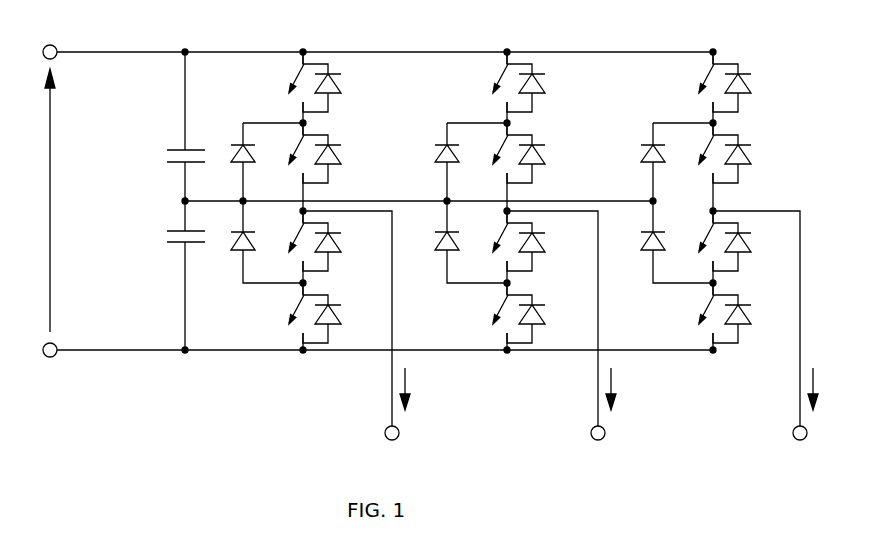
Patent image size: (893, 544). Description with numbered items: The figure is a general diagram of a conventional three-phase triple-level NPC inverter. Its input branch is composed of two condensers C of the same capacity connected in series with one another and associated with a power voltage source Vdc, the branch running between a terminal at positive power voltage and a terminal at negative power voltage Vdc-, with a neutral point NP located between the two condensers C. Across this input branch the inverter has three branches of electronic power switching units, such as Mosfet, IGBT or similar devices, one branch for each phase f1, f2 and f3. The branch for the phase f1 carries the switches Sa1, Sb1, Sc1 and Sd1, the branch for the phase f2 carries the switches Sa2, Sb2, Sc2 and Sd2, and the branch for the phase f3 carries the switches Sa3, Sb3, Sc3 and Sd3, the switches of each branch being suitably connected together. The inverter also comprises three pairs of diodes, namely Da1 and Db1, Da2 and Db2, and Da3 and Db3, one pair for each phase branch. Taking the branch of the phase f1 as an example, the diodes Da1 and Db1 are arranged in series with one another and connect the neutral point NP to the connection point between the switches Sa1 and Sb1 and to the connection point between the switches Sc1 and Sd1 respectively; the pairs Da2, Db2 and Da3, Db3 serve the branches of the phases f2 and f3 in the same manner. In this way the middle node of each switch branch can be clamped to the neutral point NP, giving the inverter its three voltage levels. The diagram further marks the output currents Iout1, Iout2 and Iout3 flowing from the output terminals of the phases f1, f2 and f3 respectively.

The electronic power switching unit Sa1 is at (299, 82).
The electronic power switching unit Sb1 is at (301, 153).
The electronic power switching unit Sc1 is at (301, 241).
The electronic power switching unit Sd1 is at (301, 313).
The diode Da1 is at (254, 158).
The diode Db1 is at (254, 242).
The electronic power switching unit Sa2 is at (503, 82).
The electronic power switching unit Sb2 is at (505, 153).
The electronic power switching unit Sc2 is at (505, 241).
The electronic power switching unit Sd2 is at (505, 313).
The diode Da2 is at (458, 158).
The diode Db2 is at (458, 242).
The electronic power switching unit Sa3 is at (709, 82).
The electronic power switching unit Sb3 is at (711, 153).
The electronic power switching unit Sc3 is at (711, 241).
The electronic power switching unit Sd3 is at (711, 313).
The diode Da3 is at (664, 158).
The diode Db3 is at (664, 242).
The condenser C is at (173, 201).
The neutral point NP is at (400, 203).
The power voltage source Vdc is at (33, 200).
The terminal with negative power voltage Vdc- is at (196, 373).
The phase f1 is at (351, 329).
The phase f2 is at (556, 329).
The phase f3 is at (760, 329).
The output current phase 1 Iout1 is at (435, 388).
The output current phase 2 Iout2 is at (641, 388).
The output current phase 3 Iout3 is at (843, 388).